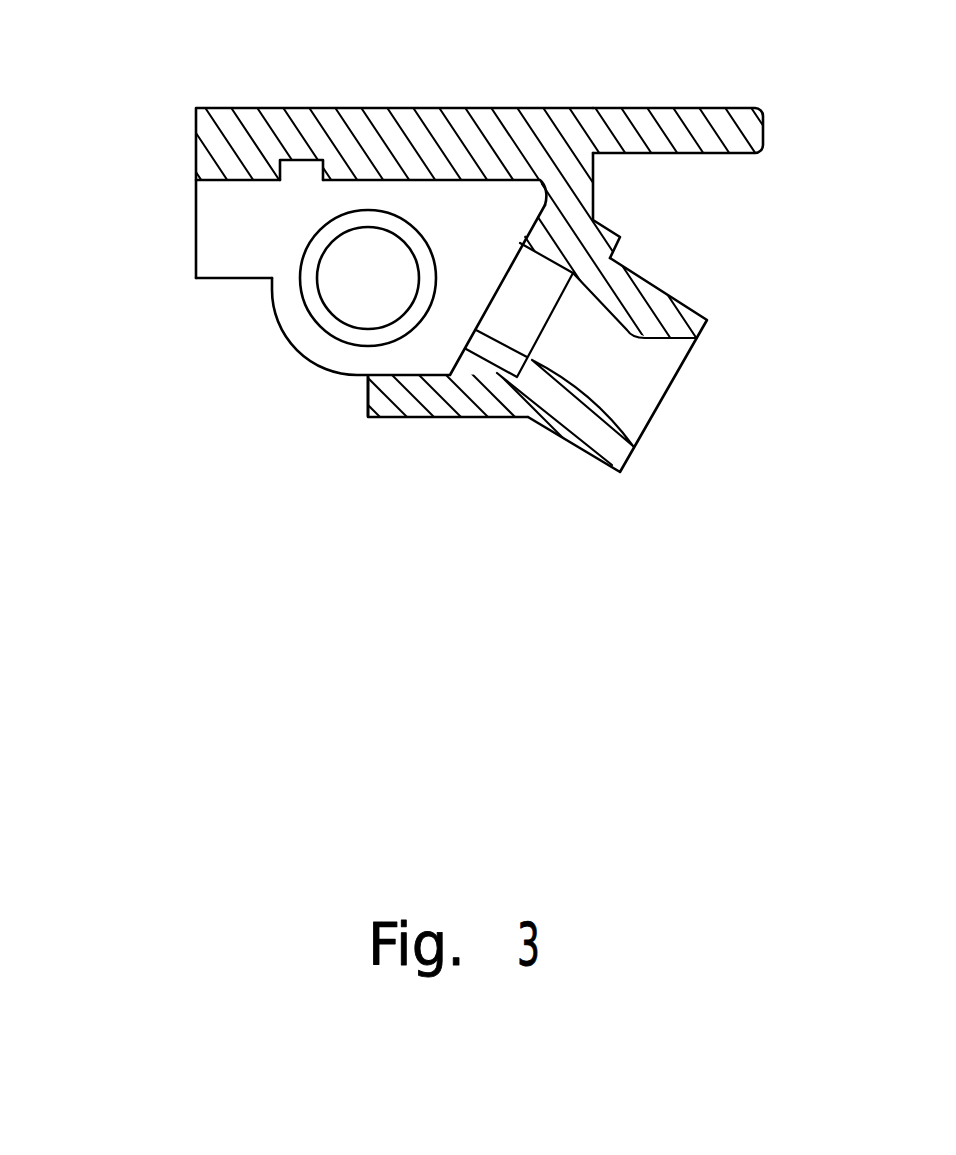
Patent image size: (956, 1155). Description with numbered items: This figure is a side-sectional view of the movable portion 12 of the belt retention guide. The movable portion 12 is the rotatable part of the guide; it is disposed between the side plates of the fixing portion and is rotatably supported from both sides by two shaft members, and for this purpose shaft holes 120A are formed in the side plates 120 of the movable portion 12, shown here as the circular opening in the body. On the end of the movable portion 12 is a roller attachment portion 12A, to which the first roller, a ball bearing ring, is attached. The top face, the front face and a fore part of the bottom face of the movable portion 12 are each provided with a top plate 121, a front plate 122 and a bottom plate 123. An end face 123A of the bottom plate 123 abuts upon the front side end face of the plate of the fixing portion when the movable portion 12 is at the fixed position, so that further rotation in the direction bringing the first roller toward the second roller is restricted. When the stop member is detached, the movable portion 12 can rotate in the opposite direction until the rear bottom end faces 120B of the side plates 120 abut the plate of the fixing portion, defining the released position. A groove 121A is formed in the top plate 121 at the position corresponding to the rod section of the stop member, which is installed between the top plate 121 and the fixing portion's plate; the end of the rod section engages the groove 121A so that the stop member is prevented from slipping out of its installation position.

The movable portion 12 is at (485, 497).
The roller attachment portion 12A is at (678, 302).
The side plates 120 is at (216, 242).
The shaft hole 120A is at (366, 233).
The rear bottom end face 120B is at (197, 277).
The top plate 121 is at (321, 108).
The groove 121A is at (303, 162).
The front plate 122 is at (593, 190).
The bottom plate 123 is at (422, 417).
The end face 123A is at (366, 390).